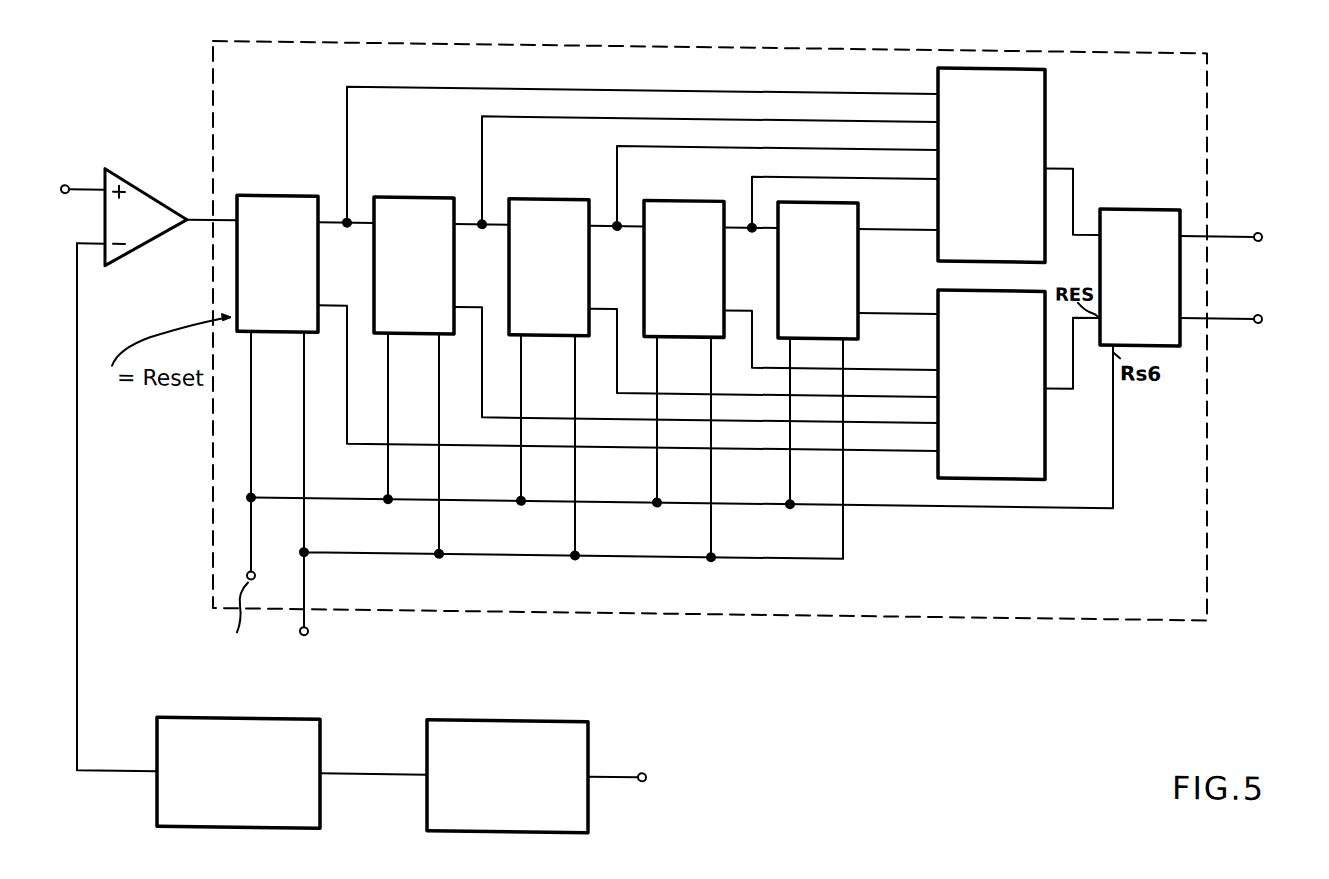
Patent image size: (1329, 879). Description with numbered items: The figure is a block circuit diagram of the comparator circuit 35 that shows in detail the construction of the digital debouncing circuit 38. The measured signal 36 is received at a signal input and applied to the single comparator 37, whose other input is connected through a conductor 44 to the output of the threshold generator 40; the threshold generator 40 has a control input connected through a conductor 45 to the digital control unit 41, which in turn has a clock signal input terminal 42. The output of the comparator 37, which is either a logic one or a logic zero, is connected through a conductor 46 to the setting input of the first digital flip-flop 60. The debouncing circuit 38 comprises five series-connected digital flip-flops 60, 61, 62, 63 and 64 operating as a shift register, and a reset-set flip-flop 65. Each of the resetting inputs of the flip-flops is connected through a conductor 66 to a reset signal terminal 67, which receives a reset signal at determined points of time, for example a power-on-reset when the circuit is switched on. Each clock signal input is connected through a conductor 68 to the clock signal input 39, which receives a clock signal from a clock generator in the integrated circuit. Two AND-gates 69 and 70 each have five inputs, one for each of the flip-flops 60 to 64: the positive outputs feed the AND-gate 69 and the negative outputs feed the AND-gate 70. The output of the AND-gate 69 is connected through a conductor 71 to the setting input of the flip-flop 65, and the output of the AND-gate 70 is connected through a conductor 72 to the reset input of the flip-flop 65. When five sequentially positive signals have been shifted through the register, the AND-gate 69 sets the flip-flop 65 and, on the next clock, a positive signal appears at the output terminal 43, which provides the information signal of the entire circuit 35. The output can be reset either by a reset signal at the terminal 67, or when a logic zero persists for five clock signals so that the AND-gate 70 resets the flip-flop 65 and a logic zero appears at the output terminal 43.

The comparator circuit 35 is at (126, 95).
The measured signal 36 is at (68, 188).
The comparator 37 is at (136, 252).
The digital debouncing circuit 38 is at (893, 611).
The clock signal input 39 is at (309, 627).
The threshold generator 40 is at (243, 828).
The digital control unit 41 is at (514, 829).
The clock signal input terminal 42 is at (646, 769).
The output terminal 43 is at (1262, 219).
The conductor 44 is at (80, 666).
The conductor 45 is at (371, 769).
The conductor 46 is at (196, 212).
The first digital flip-flop 60 is at (278, 195).
The digital flip-flop 61 is at (415, 196).
The digital flip-flop 62 is at (553, 197).
The digital flip-flop 63 is at (688, 196).
The digital flip-flop 64 is at (860, 203).
The reset-set flip-flop 65 is at (1140, 193).
The conductor 66 is at (253, 366).
The reset signal terminal 67 is at (238, 626).
The conductor 68 is at (635, 555).
The AND-gate 69 is at (1047, 99).
The AND-gate 70 is at (1046, 432).
The conductor 71 is at (1078, 174).
The conductor 72 is at (1075, 359).